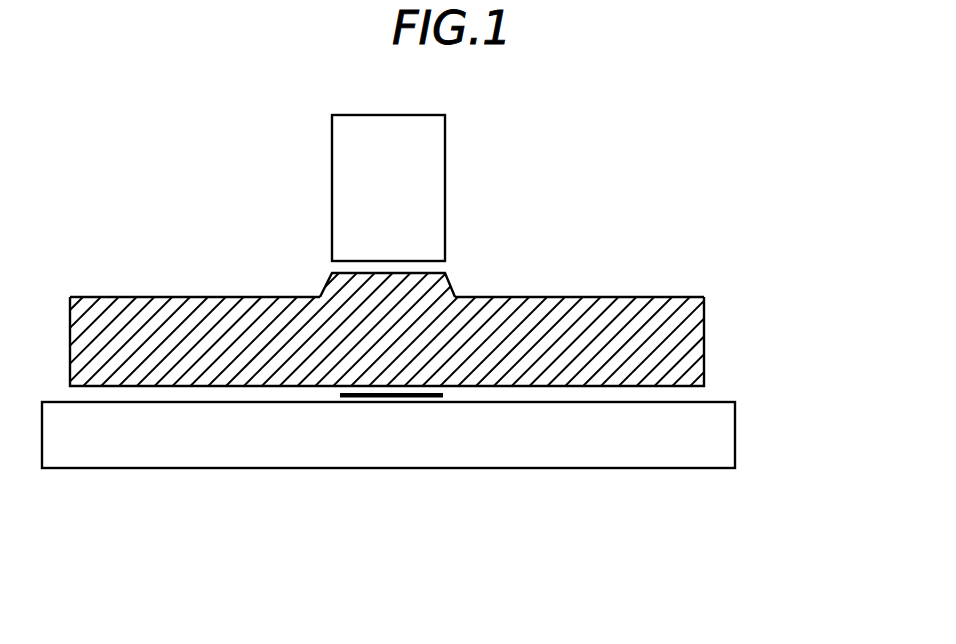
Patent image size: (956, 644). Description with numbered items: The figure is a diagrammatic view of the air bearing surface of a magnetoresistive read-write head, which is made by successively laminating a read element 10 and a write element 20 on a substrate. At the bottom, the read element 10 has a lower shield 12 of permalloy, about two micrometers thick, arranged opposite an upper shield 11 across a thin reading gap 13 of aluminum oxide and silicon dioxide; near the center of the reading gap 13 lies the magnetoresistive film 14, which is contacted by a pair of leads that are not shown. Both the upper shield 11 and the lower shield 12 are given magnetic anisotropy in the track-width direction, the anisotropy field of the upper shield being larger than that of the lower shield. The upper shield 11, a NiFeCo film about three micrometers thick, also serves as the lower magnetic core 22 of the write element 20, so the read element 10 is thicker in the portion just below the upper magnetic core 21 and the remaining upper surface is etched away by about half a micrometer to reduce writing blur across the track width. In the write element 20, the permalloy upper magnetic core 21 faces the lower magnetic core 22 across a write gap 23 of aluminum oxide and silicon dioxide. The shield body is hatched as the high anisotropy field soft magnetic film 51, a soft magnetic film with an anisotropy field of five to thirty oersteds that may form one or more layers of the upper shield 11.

The read element 10 is at (445, 413).
The upper shield 11 is at (456, 292).
The lower shield 12 is at (569, 452).
The reading gap 13 is at (473, 392).
The magnetoresistive film 14 is at (383, 397).
The write element 20 is at (456, 256).
The upper magnetic core 21 is at (435, 202).
The lower magnetic core 22 is at (456, 292).
The write gap 23 is at (350, 267).
The high anisotropy field soft magnetic film 51 is at (220, 317).